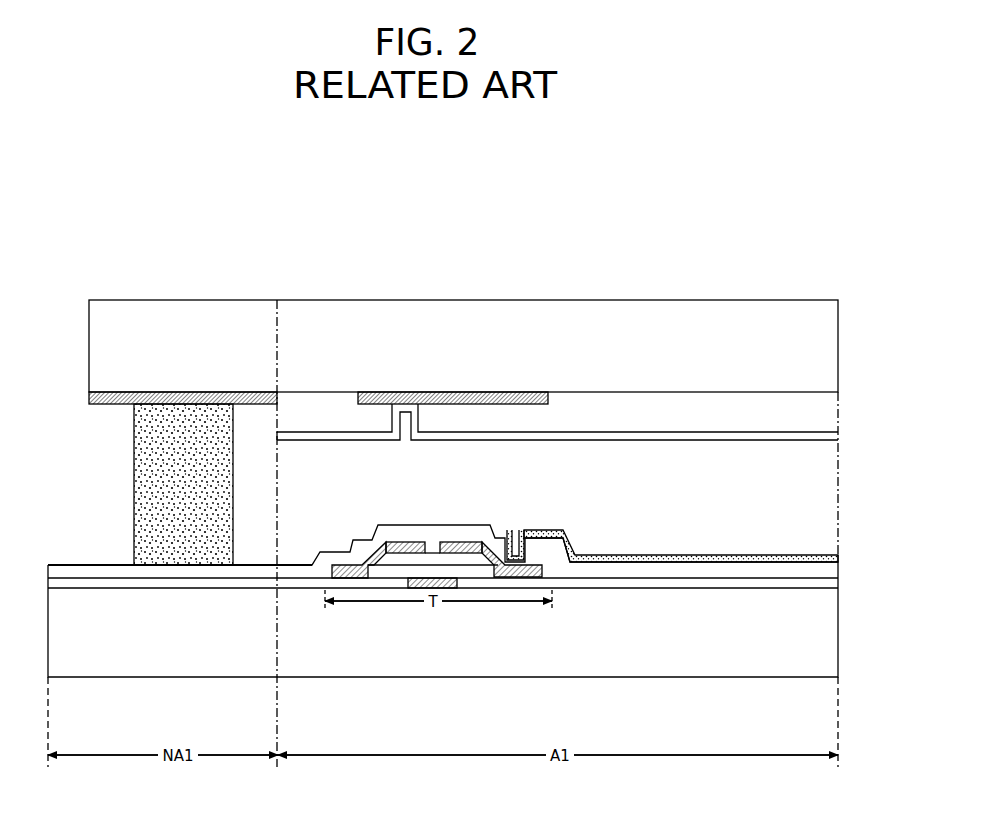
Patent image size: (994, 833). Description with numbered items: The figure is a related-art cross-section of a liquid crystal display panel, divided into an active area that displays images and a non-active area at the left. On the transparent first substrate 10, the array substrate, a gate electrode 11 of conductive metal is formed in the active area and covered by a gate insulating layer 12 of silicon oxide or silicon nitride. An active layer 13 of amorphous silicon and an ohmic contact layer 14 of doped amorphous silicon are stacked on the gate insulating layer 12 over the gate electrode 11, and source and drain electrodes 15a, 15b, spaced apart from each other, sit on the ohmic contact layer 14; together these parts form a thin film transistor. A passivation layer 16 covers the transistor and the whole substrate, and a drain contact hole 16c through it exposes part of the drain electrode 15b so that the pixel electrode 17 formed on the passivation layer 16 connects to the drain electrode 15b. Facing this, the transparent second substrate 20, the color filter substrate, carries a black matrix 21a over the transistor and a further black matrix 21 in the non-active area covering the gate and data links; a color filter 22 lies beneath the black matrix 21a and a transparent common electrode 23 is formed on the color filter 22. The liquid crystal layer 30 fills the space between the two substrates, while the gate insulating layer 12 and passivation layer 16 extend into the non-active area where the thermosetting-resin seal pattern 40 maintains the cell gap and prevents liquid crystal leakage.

The transparent first substrate 10 is at (245, 657).
The gate electrode 11 is at (418, 588).
The gate insulating layer 12 is at (118, 583).
The active layer 13 is at (432, 558).
The ohmic contact layer 14 is at (380, 553).
The source electrode 15a is at (405, 545).
The drain electrode 15b is at (452, 548).
The passivation layer 16 is at (80, 566).
The drain contact hole 16c is at (526, 525).
The pixel electrode 17 is at (607, 556).
The transparent second substrate 20 is at (112, 312).
The black matrix 21 is at (243, 400).
The black matrix 21a is at (412, 403).
The color filter 22 is at (611, 405).
The common electrode 23 is at (698, 438).
The liquid crystal layer 30 is at (840, 493).
The seal pattern 40 is at (133, 441).